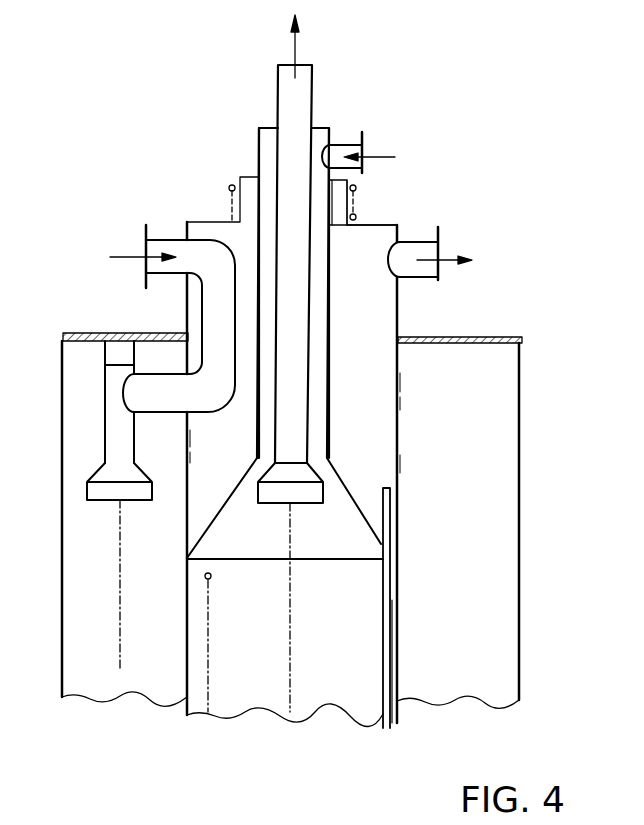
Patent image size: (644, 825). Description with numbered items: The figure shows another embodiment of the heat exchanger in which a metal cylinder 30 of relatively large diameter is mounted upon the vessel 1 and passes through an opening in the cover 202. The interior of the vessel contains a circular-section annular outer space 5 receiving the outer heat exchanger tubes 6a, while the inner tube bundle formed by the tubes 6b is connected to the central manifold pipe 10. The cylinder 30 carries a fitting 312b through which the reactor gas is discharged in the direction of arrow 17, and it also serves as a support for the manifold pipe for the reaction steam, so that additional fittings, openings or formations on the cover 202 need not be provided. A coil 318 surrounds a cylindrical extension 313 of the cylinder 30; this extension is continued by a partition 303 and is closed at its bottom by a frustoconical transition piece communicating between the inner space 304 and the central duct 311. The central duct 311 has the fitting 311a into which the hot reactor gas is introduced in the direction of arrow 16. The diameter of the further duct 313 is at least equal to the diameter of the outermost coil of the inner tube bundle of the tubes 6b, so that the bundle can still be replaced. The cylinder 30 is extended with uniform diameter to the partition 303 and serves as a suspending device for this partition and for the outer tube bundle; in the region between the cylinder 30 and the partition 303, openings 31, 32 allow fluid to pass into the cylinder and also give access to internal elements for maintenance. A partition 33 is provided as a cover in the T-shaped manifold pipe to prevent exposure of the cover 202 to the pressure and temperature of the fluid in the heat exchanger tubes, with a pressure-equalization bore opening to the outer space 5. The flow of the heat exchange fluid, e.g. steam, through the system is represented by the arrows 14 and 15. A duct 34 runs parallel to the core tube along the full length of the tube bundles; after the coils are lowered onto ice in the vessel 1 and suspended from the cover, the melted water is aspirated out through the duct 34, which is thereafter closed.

The vessel 1 is at (520, 418).
The annular outer space 5 is at (78, 578).
The heat exchanger tubes 6a is at (118, 640).
The heat exchanger tubes 6b is at (208, 627).
The central manifold pipe 10 is at (313, 80).
The arrow 14 is at (124, 257).
The arrow 15 is at (300, 47).
The arrow 16 is at (370, 153).
The arrow 17 is at (447, 253).
The metal cylinder 30 is at (400, 307).
The opening 31 is at (185, 420).
The opening 32 is at (185, 453).
The partition 33 is at (107, 362).
The cover 202 is at (483, 337).
The partition 303 is at (397, 593).
The inner space 304 is at (355, 645).
The central duct 311 is at (258, 147).
The fitting 311a is at (338, 143).
The fitting 312b is at (423, 238).
The cylindrical extension 313 is at (355, 180).
The coil 318 is at (357, 220).
The duct 34 is at (383, 693).